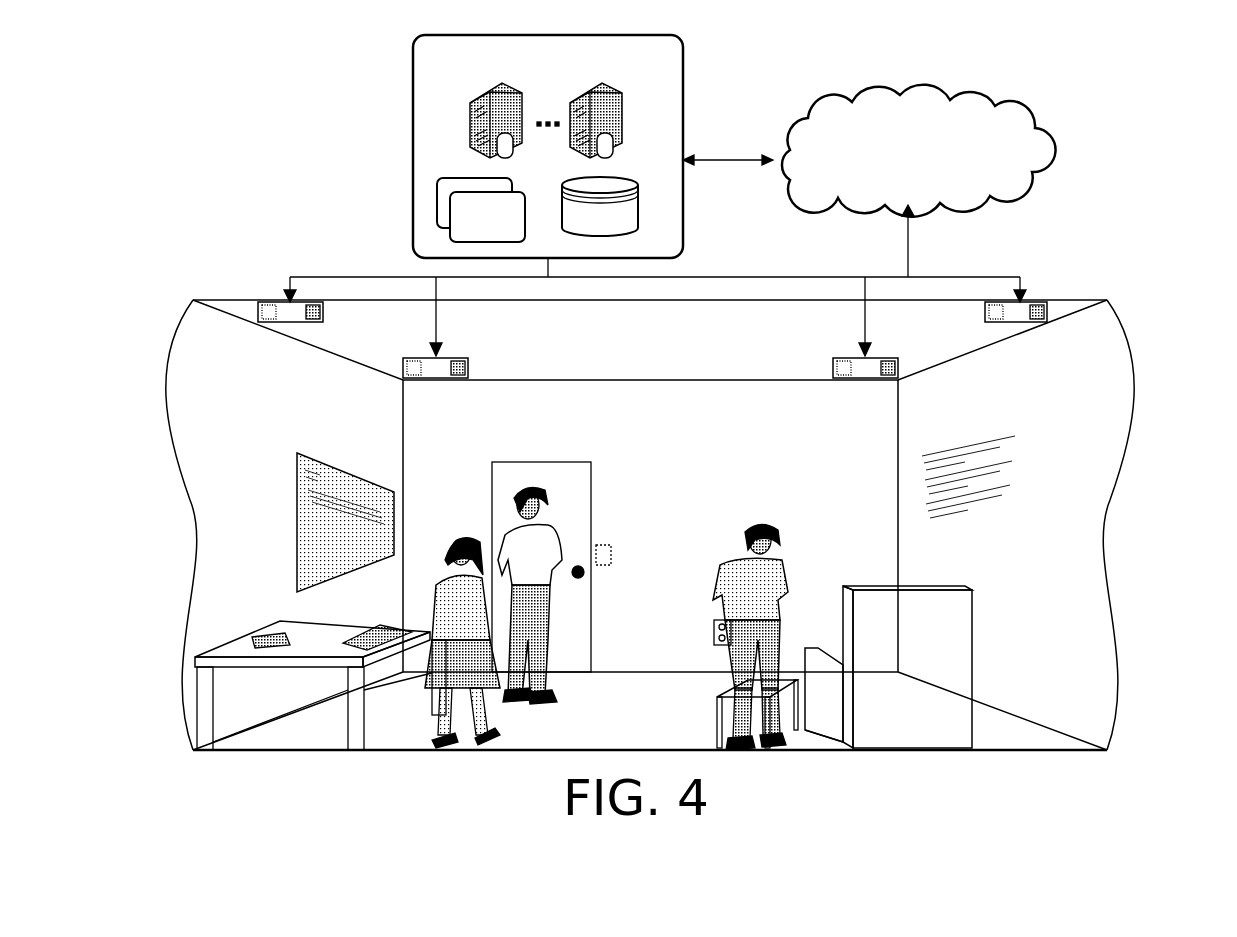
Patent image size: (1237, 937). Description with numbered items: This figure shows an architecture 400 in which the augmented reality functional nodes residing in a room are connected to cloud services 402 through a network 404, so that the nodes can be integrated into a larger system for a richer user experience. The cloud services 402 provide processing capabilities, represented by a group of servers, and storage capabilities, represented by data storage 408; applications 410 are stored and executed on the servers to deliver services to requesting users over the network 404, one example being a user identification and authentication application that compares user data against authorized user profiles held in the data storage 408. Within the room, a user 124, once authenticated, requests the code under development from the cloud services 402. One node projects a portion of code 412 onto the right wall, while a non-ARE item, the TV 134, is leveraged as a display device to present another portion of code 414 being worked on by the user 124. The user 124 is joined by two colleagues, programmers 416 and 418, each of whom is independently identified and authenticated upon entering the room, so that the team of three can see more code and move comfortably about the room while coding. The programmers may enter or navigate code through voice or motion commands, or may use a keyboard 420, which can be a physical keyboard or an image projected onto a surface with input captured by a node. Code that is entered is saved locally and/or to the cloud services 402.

The architecture 400 is at (1150, 66).
The cloud services 402 is at (655, 195).
The network 404 is at (919, 181).
The data storage 408 is at (640, 204).
The applications 410 is at (437, 200).
The TV 134 is at (293, 440).
The code portion 414 is at (310, 518).
The code portion 412 is at (985, 527).
The keyboard 420 is at (365, 640).
The user 124 is at (533, 482).
The programmer 416 is at (455, 745).
The programmer 418 is at (758, 522).